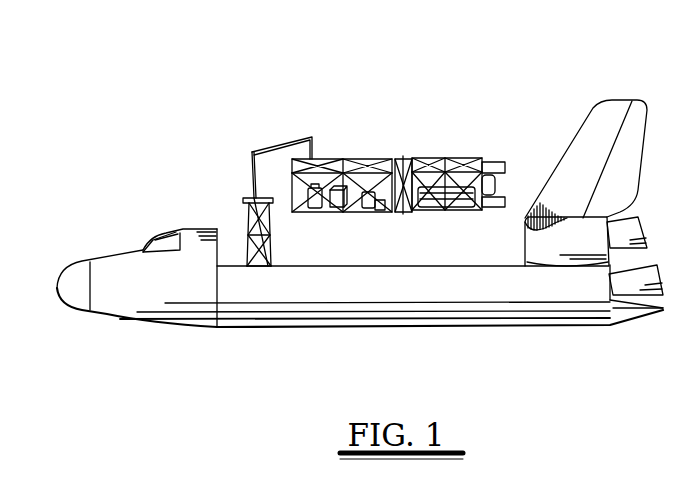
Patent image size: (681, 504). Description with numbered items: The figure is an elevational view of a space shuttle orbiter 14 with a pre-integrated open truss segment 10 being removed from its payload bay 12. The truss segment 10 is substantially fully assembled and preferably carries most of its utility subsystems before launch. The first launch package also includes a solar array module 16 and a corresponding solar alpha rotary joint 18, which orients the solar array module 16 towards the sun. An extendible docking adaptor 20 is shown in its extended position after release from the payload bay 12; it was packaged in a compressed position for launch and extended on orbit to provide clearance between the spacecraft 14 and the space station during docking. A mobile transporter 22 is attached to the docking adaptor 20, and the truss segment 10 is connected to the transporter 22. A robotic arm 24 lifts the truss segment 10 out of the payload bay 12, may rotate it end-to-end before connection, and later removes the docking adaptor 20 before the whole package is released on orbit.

The pre-integrated open truss segment 10 is at (427, 104).
The payload bay 12 is at (448, 266).
The space shuttle orbiter 14 is at (150, 317).
The solar array module 16 is at (455, 158).
The solar alpha rotary joint 18 is at (400, 158).
The extendible docking adaptor 20 is at (250, 260).
The mobile transporter 22 is at (255, 196).
The robotic arm 24 is at (277, 142).